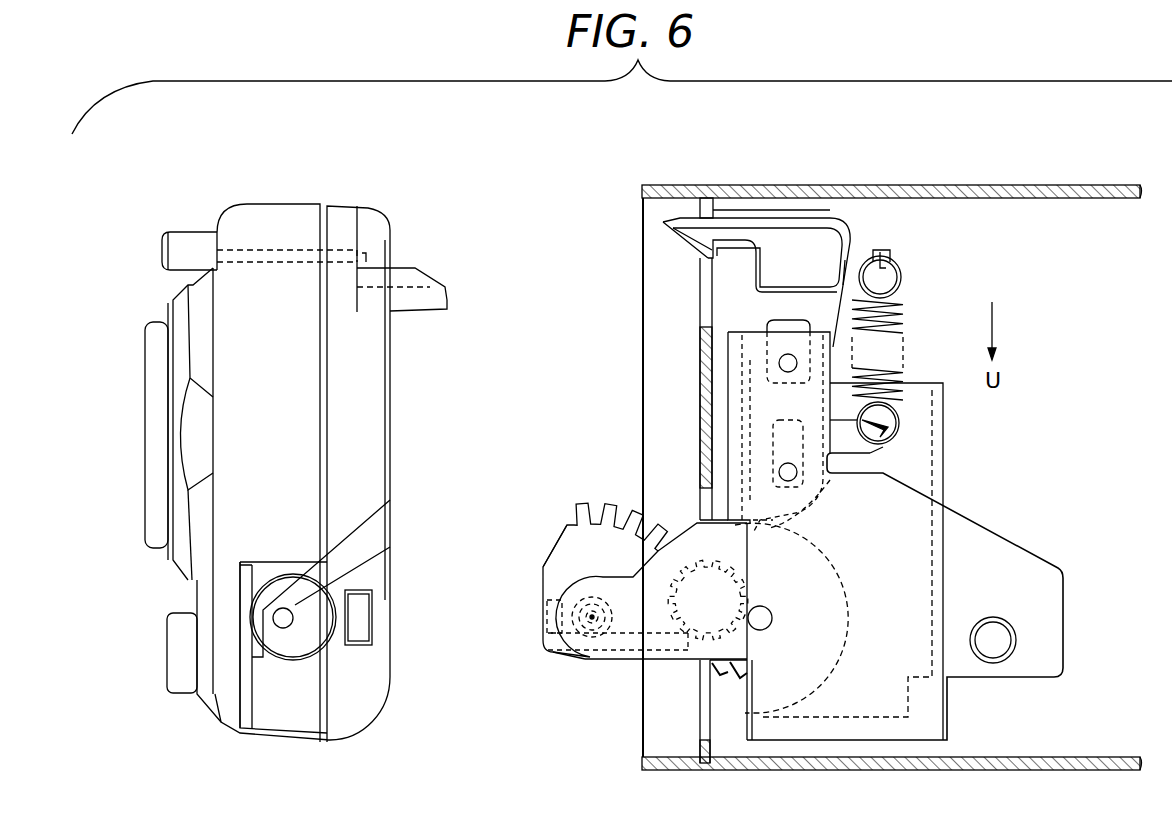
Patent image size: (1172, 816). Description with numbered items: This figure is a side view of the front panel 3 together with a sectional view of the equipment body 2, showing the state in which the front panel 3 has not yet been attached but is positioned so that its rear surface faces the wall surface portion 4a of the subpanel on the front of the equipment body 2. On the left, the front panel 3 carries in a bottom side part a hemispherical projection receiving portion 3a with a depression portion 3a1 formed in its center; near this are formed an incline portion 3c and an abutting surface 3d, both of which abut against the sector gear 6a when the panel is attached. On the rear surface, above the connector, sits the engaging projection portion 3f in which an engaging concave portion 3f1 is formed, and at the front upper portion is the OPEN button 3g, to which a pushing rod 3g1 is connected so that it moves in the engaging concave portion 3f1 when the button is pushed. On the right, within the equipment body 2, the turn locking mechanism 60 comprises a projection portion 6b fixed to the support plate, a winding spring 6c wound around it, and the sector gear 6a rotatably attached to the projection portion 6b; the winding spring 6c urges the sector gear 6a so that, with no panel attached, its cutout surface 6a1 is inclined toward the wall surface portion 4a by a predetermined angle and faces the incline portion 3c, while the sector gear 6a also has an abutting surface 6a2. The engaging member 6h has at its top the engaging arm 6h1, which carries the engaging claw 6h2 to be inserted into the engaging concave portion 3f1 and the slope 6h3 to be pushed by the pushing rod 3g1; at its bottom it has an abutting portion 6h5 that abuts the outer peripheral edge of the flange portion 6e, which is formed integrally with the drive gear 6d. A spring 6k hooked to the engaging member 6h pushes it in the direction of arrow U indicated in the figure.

The equipment body 2 is at (1012, 185).
The front panel 3 is at (304, 212).
The projection receiving portion 3a is at (305, 652).
The depression portion 3a1 is at (285, 617).
The incline portion 3c is at (372, 530).
The abutting surface 3d is at (250, 640).
The engaging projection portion 3f is at (446, 300).
The engaging concave portion 3f1 is at (352, 280).
The OPEN button 3g is at (170, 248).
The pushing rod 3g1 is at (367, 256).
The wall surface portion 4a is at (700, 390).
The sector gear 6a is at (590, 510).
The cutout surface 6a1 is at (552, 542).
The abutting surface 6a2 is at (568, 656).
The projection portion 6b is at (593, 622).
The winding spring 6c is at (553, 632).
The drive gear 6d is at (705, 665).
The flange portion 6e is at (846, 650).
The engaging member 6h is at (828, 218).
The engaging arm 6h1 is at (752, 218).
The engaging claw 6h2 is at (730, 257).
The slope 6h3 is at (706, 253).
The abutting portion 6h5 is at (812, 504).
The spring 6k is at (905, 310).
The turn locking mechanism 60 is at (1090, 327).